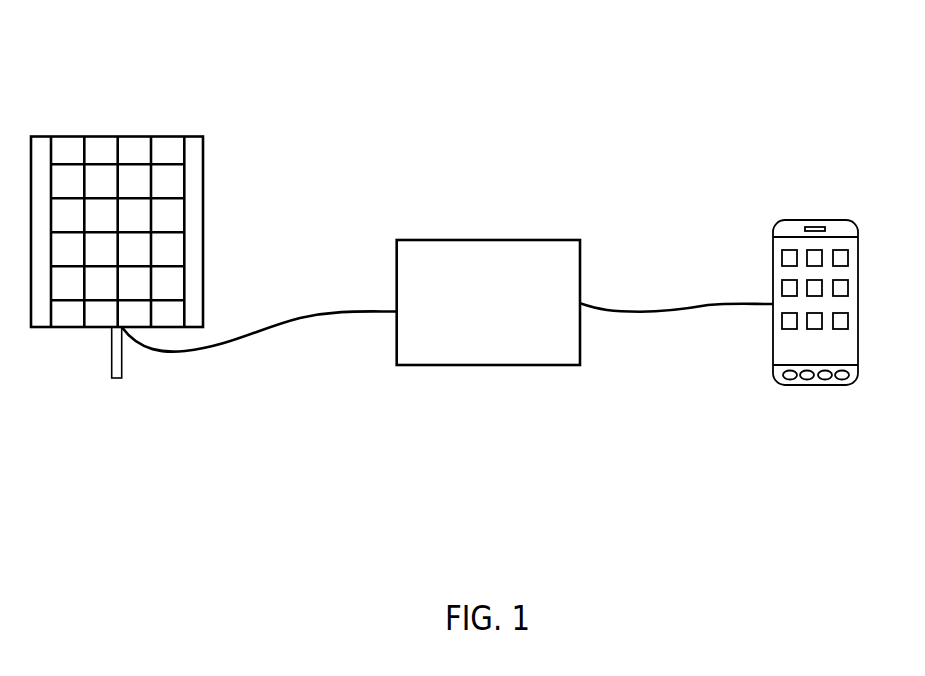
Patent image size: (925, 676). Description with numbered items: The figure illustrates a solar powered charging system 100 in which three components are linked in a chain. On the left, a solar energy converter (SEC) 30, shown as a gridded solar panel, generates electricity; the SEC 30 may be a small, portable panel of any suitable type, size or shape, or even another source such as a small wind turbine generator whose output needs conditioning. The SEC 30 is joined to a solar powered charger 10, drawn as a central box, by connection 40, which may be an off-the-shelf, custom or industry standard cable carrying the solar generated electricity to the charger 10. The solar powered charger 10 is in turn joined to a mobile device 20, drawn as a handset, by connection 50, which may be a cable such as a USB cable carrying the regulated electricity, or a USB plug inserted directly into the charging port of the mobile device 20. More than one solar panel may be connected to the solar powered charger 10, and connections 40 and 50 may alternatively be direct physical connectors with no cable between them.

The solar powered charging system 100 is at (657, 80).
The solar powered charger 10 is at (502, 240).
The mobile device 20 is at (812, 220).
The solar energy converter (SEC) 30 is at (102, 136).
The connection 40 is at (260, 333).
The connection 50 is at (660, 312).